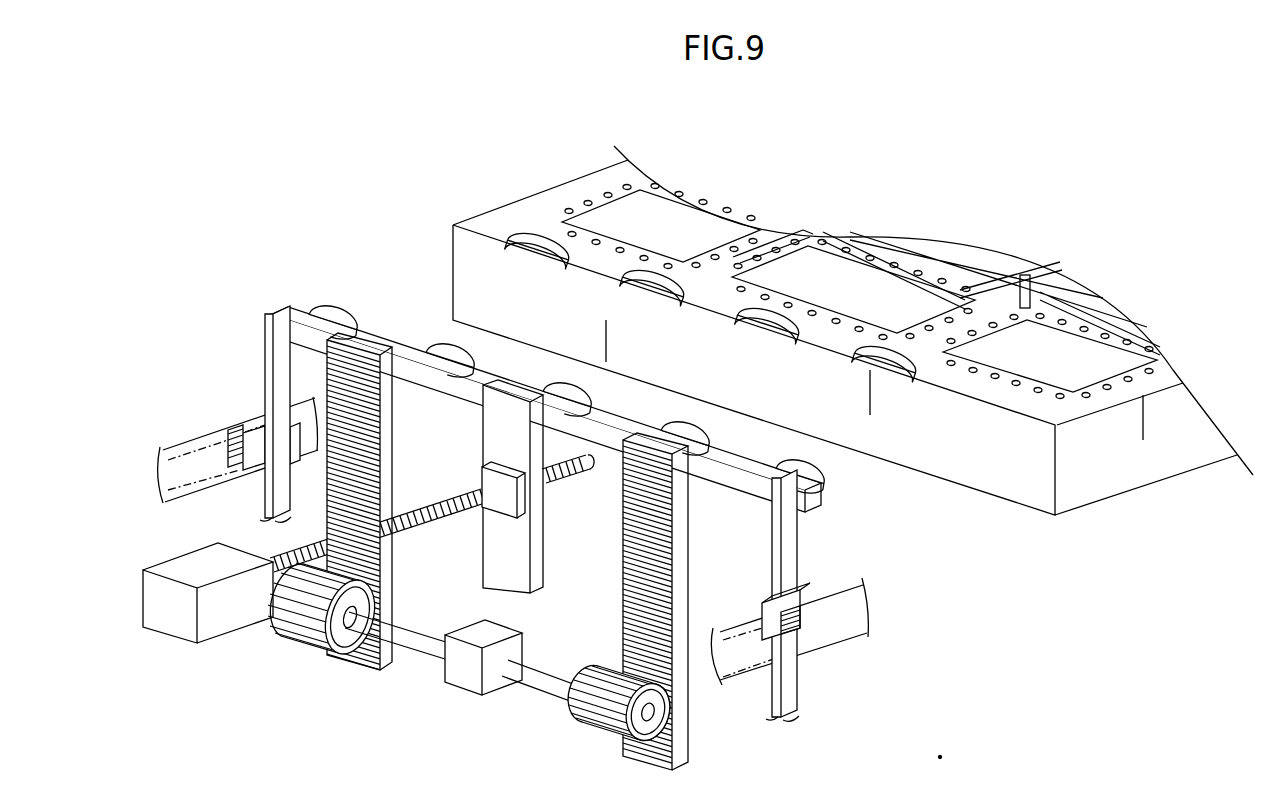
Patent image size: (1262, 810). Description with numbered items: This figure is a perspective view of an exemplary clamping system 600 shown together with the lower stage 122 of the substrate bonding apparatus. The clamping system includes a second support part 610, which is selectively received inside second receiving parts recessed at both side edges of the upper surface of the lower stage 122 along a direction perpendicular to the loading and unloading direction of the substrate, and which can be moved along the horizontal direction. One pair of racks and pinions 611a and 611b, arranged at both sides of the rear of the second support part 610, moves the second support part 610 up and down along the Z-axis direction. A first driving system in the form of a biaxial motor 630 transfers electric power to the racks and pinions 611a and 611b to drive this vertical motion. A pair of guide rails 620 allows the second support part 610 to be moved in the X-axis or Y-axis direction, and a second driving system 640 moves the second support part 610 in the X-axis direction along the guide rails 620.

The lower stage 122 is at (1095, 488).
The transfer unit 600 is at (593, 519).
The second support part 610 is at (318, 326).
The rack and pinion 611a is at (623, 587).
The rack and pinion 611b is at (603, 722).
The guide rails 620 is at (823, 648).
The biaxial motor 630 is at (467, 673).
The second driving system 640 is at (175, 562).